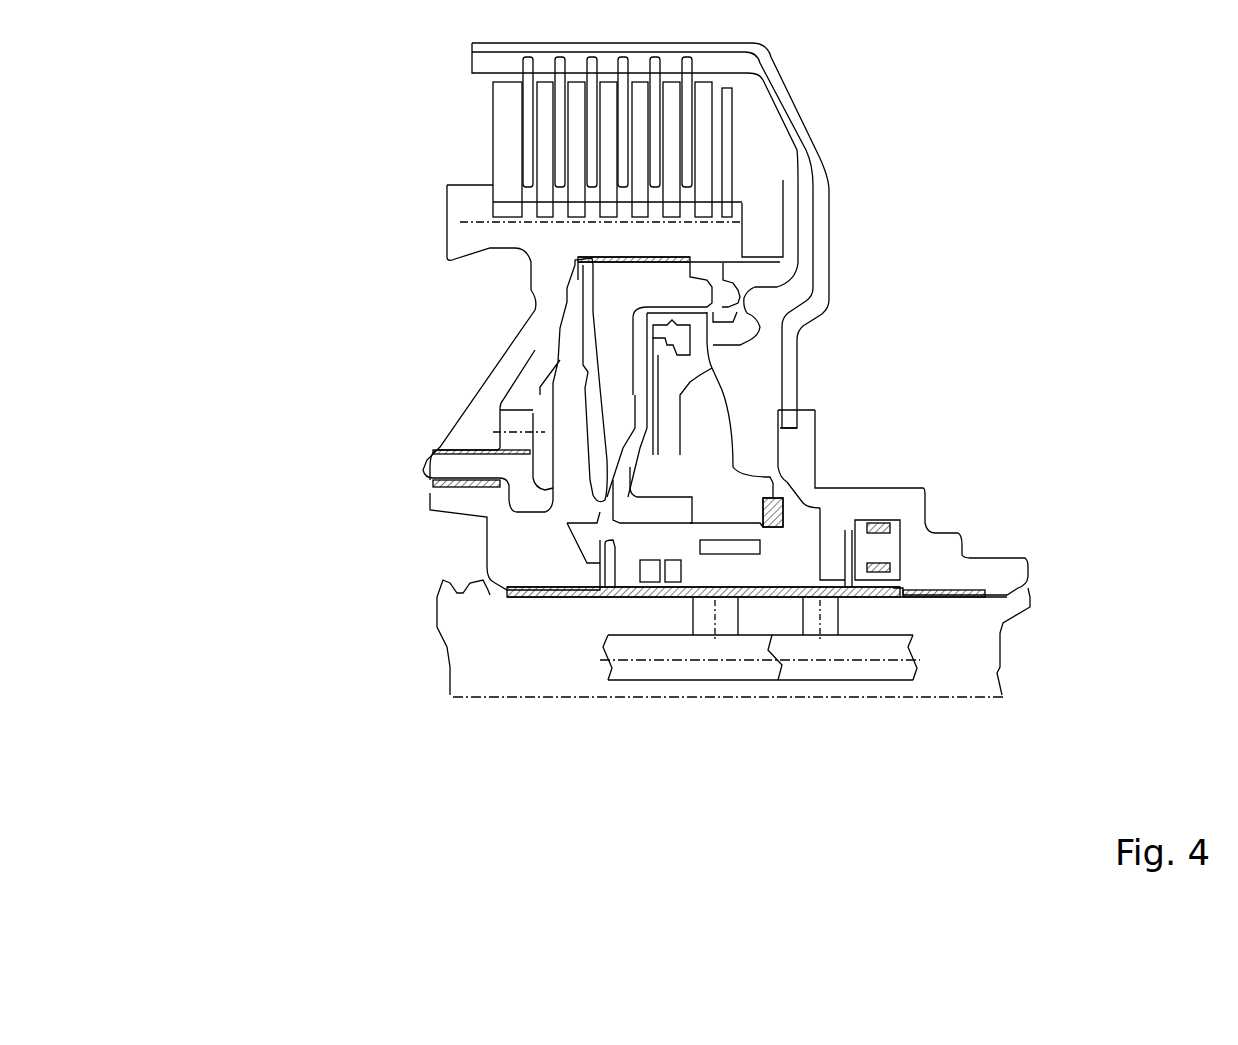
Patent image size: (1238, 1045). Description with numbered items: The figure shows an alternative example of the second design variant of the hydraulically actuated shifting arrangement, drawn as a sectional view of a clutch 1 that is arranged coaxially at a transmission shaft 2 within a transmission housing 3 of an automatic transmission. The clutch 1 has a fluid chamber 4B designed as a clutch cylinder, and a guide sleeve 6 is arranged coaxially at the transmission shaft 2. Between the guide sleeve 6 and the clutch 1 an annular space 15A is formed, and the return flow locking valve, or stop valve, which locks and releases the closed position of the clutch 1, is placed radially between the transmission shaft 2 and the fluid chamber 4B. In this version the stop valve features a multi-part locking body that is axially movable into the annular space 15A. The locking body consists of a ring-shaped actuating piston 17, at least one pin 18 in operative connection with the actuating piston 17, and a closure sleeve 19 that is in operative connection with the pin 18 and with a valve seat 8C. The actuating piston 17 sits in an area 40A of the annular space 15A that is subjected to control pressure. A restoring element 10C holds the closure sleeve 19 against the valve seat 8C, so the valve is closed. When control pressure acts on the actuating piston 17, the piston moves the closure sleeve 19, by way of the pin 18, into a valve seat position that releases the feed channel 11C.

The clutch 1 is at (615, 362).
The transmission shaft 2 is at (945, 620).
The transmission housing 3 is at (907, 180).
The fluid chamber 4B is at (712, 508).
The guide sleeve 6 is at (900, 537).
The valve seat 8C is at (693, 600).
The restoring element 10C is at (627, 597).
The feed channel 11C is at (725, 622).
The annular space 15A is at (747, 580).
The actuating piston 17 is at (818, 578).
The pin 18 is at (767, 537).
The closure sleeve 19 is at (716, 560).
The area subjected to control pressure 40A is at (840, 600).